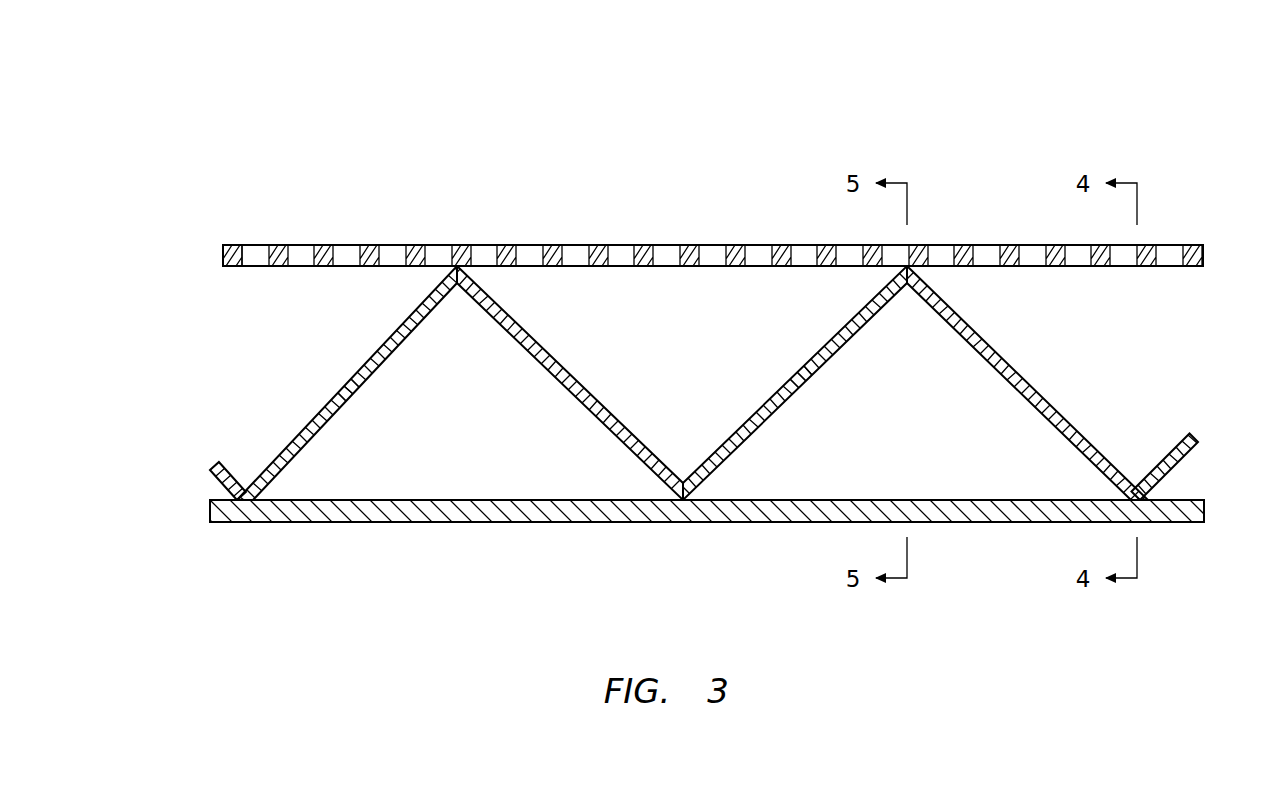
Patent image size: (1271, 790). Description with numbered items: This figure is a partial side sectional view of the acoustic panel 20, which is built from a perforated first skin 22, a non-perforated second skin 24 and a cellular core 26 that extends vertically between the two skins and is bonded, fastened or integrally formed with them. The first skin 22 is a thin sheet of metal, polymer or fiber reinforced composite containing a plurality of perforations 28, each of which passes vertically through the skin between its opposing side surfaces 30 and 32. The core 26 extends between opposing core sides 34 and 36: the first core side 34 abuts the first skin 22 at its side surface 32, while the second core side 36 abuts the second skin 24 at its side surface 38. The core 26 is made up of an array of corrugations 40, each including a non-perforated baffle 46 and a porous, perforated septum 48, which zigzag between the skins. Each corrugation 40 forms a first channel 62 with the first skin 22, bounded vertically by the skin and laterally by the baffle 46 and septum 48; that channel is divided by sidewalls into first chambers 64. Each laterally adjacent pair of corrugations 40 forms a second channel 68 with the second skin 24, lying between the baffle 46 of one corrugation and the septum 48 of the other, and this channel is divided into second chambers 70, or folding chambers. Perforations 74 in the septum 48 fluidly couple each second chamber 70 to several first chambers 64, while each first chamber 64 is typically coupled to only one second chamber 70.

The acoustic panel 20 is at (355, 104).
The first skin 22 is at (222, 257).
The second skin 24 is at (212, 505).
The cellular core 26 is at (188, 266).
The perforations 28 is at (384, 251).
The side surface 30 is at (235, 252).
The side surface 32 is at (234, 268).
The first core side 34 is at (208, 261).
The second core side 36 is at (196, 509).
The side surface 38 is at (222, 478).
The corrugations 40 is at (289, 478).
The baffle 46 is at (567, 390).
The septum 48 is at (350, 385).
The first channel 62 is at (295, 383).
The first chambers 64 is at (720, 376).
The second channel 68 is at (417, 475).
The second chambers 70 is at (692, 391).
The perforations 74 is at (363, 357).